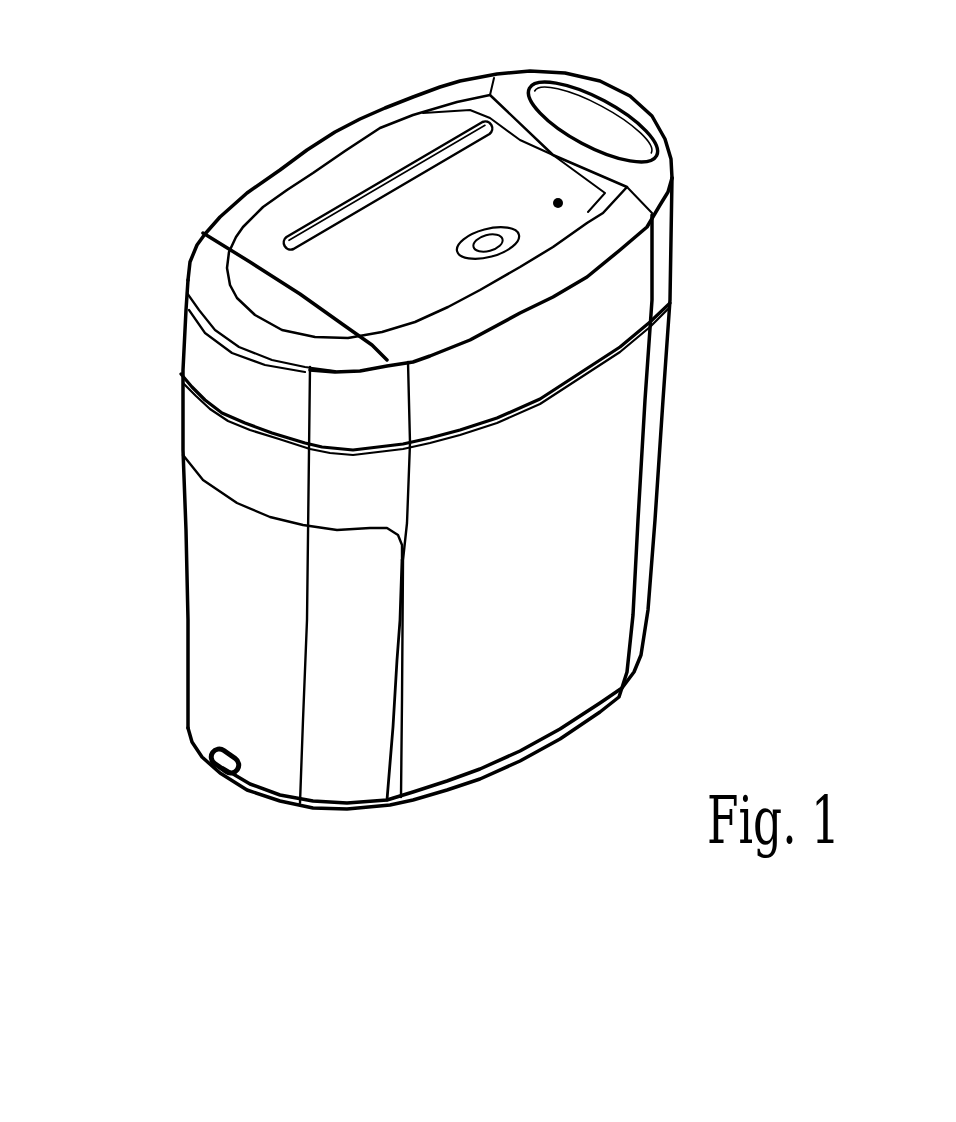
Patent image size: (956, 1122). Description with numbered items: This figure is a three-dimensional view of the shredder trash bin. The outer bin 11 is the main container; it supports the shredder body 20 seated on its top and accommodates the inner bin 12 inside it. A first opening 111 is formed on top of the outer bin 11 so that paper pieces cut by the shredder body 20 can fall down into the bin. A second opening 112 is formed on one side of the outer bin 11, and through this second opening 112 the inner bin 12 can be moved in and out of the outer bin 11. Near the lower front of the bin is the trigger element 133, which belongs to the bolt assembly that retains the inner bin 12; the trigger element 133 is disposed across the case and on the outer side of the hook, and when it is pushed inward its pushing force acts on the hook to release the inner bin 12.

The shredder body 20 is at (327, 177).
The outer bin 11 is at (617, 460).
The first opening 111 is at (620, 343).
The second opening 112 is at (403, 705).
The inner bin 12 is at (278, 762).
The trigger element 133 is at (213, 765).